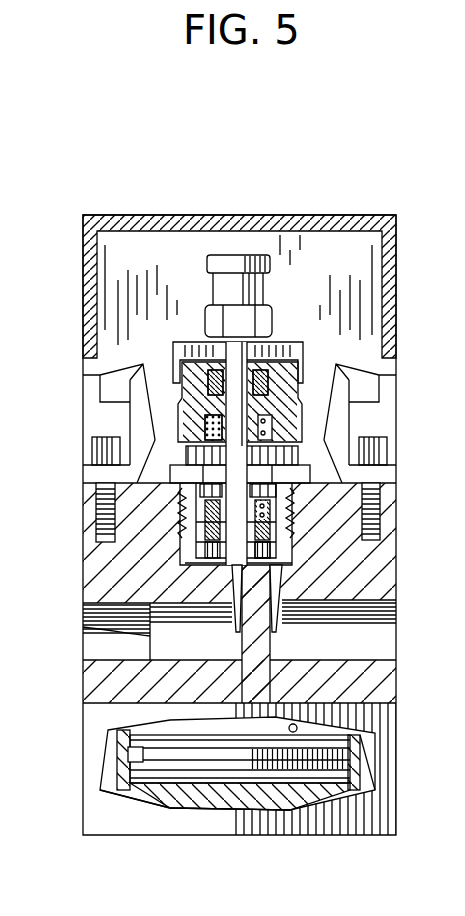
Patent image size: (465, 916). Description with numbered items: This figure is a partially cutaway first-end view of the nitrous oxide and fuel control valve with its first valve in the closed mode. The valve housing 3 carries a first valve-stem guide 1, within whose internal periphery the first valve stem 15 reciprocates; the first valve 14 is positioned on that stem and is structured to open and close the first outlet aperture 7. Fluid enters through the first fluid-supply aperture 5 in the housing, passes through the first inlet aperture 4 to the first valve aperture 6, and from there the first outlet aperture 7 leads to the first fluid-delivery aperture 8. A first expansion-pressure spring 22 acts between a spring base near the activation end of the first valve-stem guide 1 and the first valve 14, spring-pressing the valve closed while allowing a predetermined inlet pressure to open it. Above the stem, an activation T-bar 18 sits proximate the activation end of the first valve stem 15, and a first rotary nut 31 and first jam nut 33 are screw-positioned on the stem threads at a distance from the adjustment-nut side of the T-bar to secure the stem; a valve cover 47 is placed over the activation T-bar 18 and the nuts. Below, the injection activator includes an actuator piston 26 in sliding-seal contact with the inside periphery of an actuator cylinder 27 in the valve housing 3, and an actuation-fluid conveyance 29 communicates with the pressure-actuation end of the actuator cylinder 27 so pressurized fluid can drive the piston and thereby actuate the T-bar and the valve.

The valve cover 47 is at (241, 215).
The first jam nut 33 is at (240, 281).
The first rotary nut 31 is at (236, 317).
The activation T-bar 18 is at (178, 346).
The first valve-stem guide 1 is at (200, 400).
The first valve aperture 6 is at (205, 421).
The first expansion-pressure spring 22 is at (266, 435).
The first valve stem 15 is at (232, 503).
The first valve 14 is at (218, 522).
The first outlet aperture 7 is at (236, 568).
The first inlet aperture 4 is at (272, 562).
The first fluid-delivery aperture 8 is at (158, 634).
The first fluid-supply aperture 5 is at (312, 638).
The valve housing 3 is at (95, 676).
The actuator piston 26 is at (266, 752).
The actuator cylinder 27 is at (296, 778).
The actuation-fluid conveyance 29 is at (240, 790).